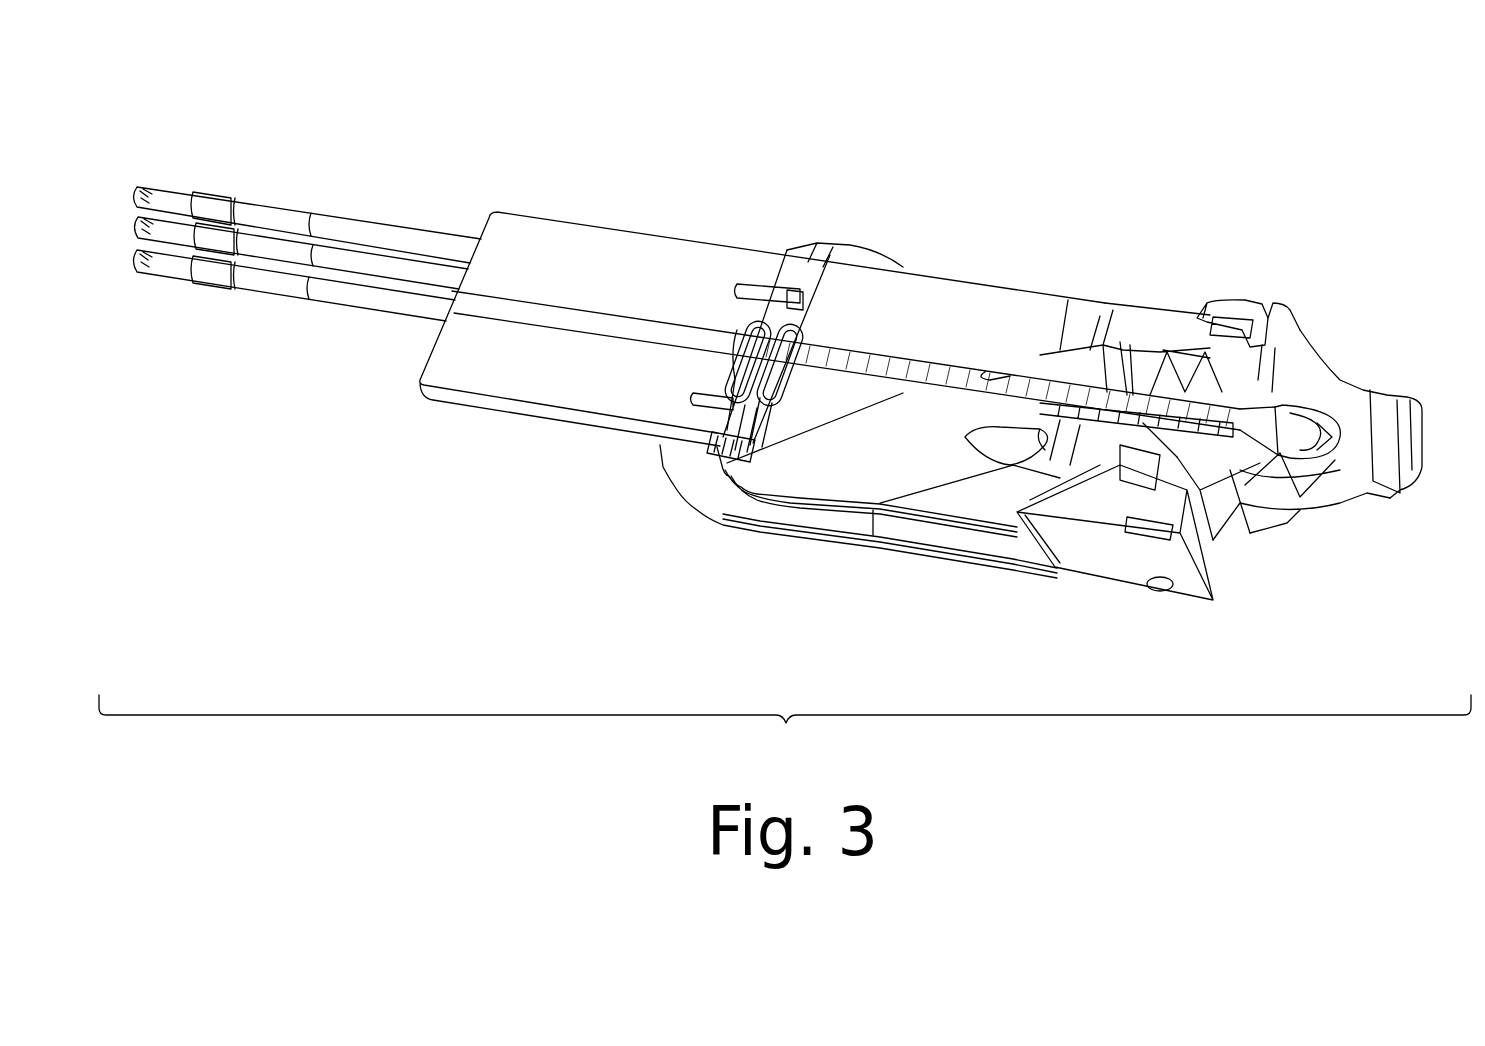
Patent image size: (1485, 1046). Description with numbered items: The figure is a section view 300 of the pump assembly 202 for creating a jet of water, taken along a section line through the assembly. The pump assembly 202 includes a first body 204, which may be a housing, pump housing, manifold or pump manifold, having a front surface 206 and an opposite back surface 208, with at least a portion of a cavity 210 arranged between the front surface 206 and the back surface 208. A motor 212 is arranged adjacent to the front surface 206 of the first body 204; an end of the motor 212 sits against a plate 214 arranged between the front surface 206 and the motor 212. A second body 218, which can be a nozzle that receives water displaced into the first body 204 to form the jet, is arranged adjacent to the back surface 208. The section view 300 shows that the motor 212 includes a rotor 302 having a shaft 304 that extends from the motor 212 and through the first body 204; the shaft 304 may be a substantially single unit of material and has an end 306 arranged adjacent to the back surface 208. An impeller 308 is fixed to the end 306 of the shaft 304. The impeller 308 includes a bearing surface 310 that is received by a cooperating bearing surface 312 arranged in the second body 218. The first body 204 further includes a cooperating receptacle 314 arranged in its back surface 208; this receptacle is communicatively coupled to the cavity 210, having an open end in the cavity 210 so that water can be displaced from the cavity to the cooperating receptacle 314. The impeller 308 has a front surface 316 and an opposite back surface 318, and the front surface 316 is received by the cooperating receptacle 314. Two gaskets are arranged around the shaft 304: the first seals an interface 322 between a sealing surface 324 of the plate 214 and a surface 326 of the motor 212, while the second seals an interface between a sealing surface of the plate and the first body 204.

The pump assembly 202 is at (322, 110).
The first body 204 is at (1050, 293).
The front surface 206 is at (812, 300).
The back surface 208 is at (1250, 345).
The cavity 210 is at (870, 475).
The motor 212 is at (660, 240).
The plate 214 is at (838, 243).
The second body 218 is at (1380, 395).
The section view 300 is at (785, 724).
The rotor 302 is at (575, 285).
The shaft 304 is at (985, 372).
The end 306 is at (1233, 425).
The impeller 308 is at (1140, 425).
The bearing surface 310 is at (1278, 410).
The cooperating bearing surface 312 is at (1265, 400).
The cooperating receptacle 314 is at (1258, 352).
The front surface 316 is at (1120, 465).
The back surface 318 is at (1193, 497).
The interface 322 is at (740, 385).
The sealing surface 324 is at (723, 433).
The surface 326 is at (722, 440).